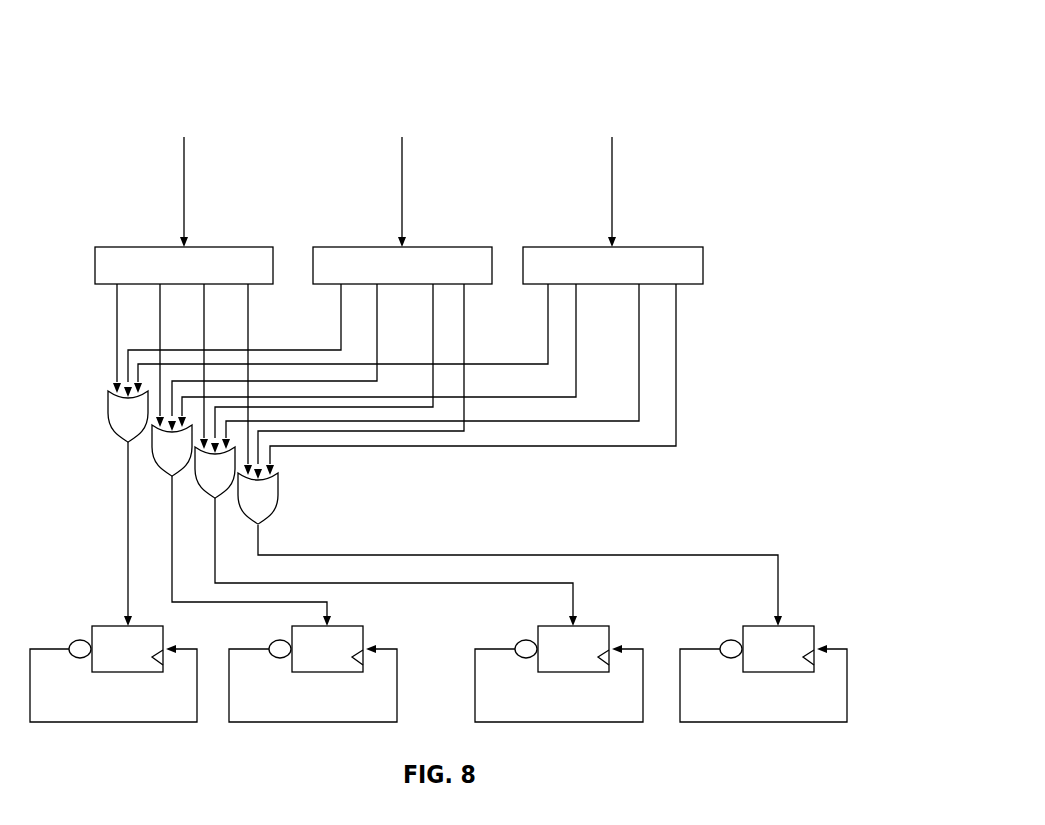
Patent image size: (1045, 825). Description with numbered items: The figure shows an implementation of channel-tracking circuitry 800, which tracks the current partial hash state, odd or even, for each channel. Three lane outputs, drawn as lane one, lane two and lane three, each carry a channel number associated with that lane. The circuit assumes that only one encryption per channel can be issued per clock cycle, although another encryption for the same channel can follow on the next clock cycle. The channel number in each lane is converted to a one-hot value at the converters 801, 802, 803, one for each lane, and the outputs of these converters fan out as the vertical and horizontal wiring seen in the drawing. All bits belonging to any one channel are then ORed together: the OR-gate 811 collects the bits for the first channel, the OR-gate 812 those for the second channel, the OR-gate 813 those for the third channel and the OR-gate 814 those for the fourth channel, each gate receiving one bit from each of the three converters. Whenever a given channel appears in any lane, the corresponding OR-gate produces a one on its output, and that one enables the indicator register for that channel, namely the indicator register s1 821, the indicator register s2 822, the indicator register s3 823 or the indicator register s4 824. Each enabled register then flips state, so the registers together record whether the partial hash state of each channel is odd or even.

The channel-tracking circuitry 800 is at (112, 58).
The one-hot converter 801 is at (156, 246).
The one-hot converter 802 is at (374, 246).
The one-hot converter 803 is at (584, 246).
The OR-gate 811 is at (108, 410).
The OR-gate 812 is at (152, 447).
The OR-gate 813 is at (195, 482).
The OR-gate 814 is at (218, 507).
The indicator register s1 821 is at (128, 672).
The indicator register s2 822 is at (328, 672).
The indicator register s3 823 is at (574, 672).
The indicator register s4 824 is at (779, 672).